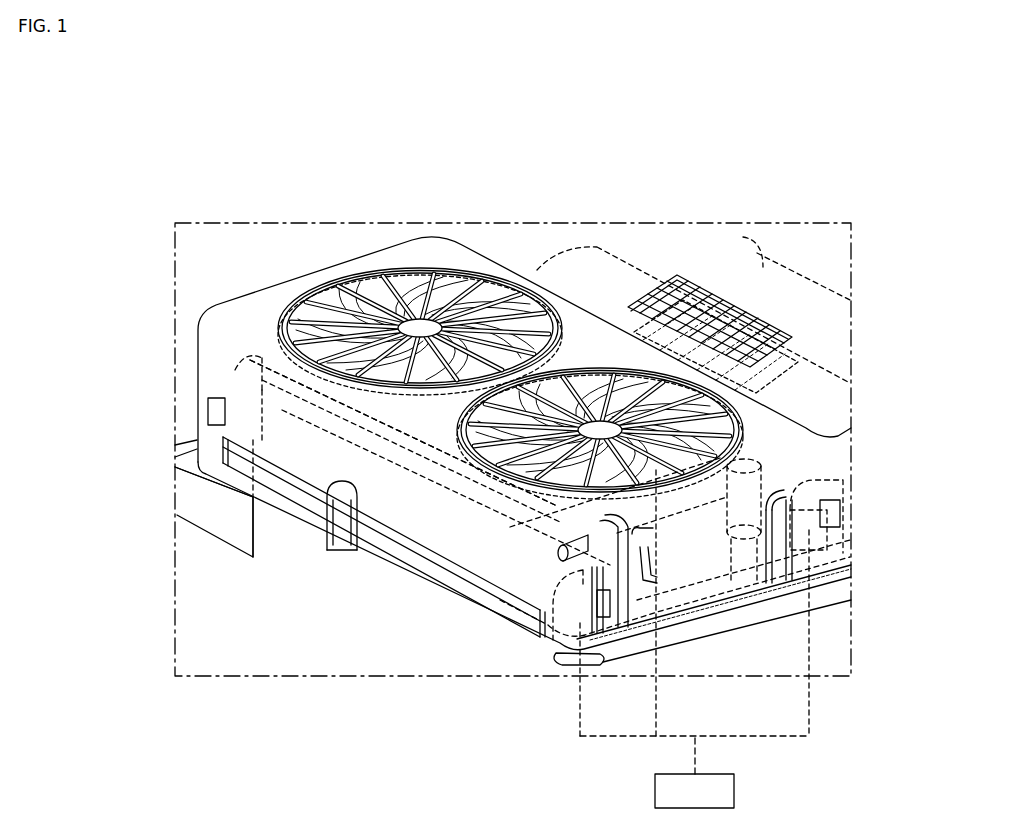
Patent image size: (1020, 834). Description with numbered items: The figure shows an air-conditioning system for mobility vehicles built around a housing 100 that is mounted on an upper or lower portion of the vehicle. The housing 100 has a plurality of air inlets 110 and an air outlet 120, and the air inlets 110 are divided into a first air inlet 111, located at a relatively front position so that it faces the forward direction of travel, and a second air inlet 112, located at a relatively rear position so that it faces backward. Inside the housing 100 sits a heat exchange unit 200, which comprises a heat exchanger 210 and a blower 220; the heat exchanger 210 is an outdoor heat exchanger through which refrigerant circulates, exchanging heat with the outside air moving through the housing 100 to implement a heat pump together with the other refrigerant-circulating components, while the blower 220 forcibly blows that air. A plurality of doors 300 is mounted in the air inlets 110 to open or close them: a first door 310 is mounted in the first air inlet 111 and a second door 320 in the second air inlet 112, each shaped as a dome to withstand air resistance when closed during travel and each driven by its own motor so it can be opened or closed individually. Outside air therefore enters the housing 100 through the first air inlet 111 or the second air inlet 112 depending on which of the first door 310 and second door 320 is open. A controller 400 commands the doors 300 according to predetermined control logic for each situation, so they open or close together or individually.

The housing 100 is at (365, 244).
The air inlets 110 is at (524, 380).
The first air inlet 111 is at (341, 488).
The second air inlet 112 is at (663, 290).
The air outlet 120 is at (607, 367).
The heat exchange unit 200 is at (125, 650).
The heat exchanger 210 is at (285, 465).
The blower 220 is at (358, 389).
The doors 300 is at (537, 429).
The first door 310 is at (443, 570).
The second door 320 is at (700, 315).
The controller 400 is at (734, 791).